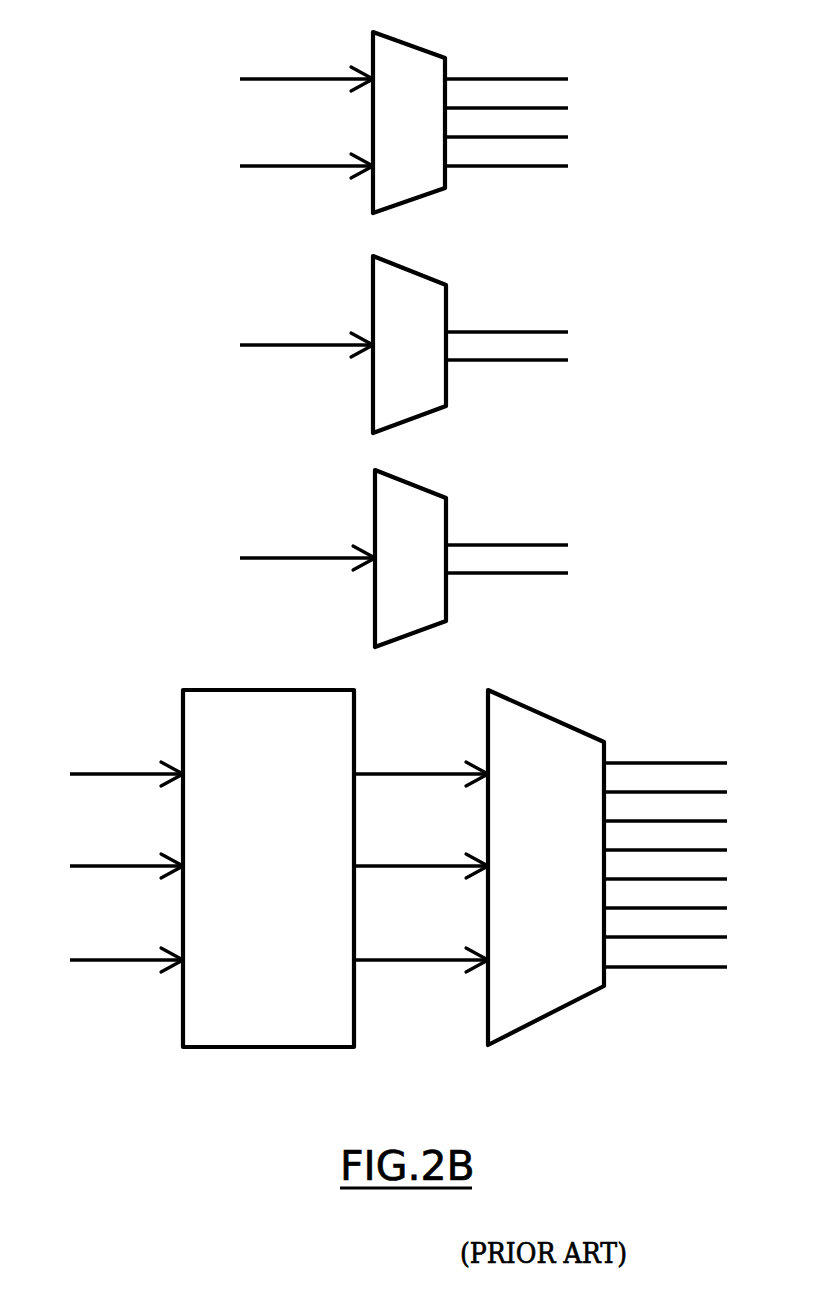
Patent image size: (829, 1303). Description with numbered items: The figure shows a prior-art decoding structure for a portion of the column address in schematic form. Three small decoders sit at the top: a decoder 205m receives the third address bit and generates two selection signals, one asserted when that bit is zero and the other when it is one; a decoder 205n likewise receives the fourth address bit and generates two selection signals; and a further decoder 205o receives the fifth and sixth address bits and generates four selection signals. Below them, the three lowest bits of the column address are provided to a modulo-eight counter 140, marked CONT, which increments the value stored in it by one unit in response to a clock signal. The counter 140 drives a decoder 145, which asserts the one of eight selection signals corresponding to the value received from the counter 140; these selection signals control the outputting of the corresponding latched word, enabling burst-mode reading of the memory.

The decoder 205o is at (430, 53).
The decoder 205n is at (415, 270).
The decoder 205m is at (428, 485).
The counter 140 is at (228, 1047).
The decoder 145 is at (518, 1032).